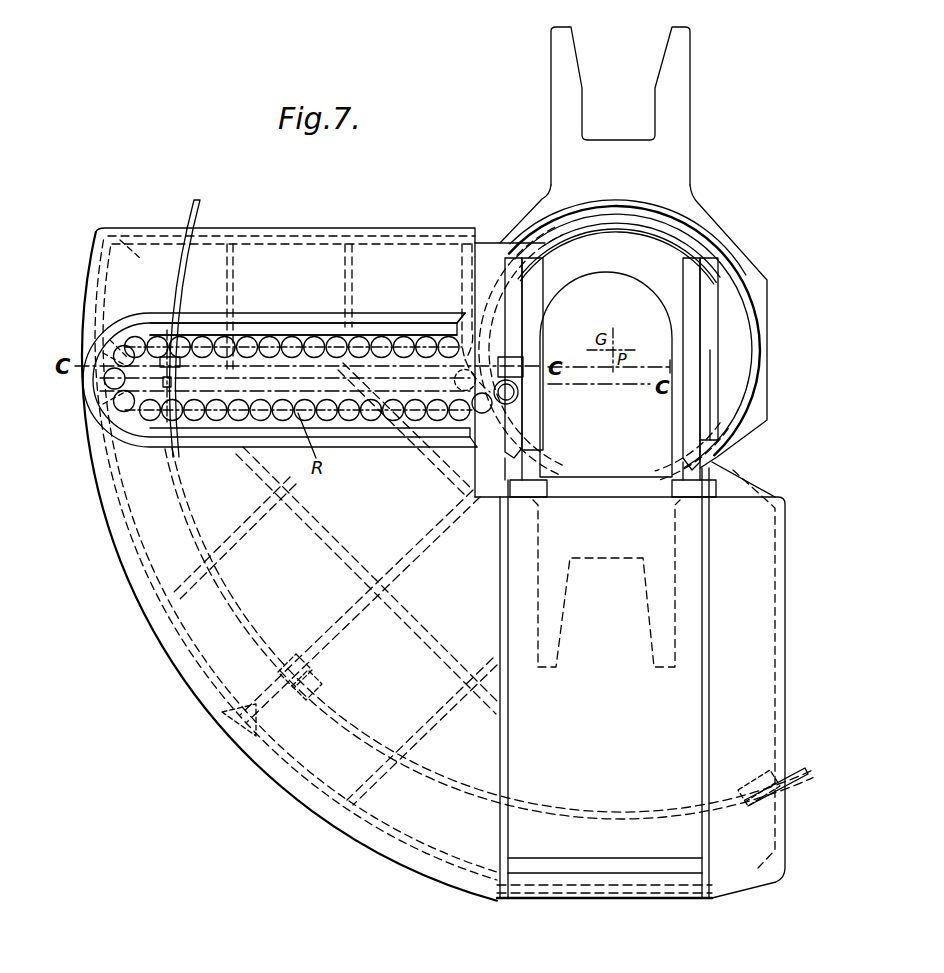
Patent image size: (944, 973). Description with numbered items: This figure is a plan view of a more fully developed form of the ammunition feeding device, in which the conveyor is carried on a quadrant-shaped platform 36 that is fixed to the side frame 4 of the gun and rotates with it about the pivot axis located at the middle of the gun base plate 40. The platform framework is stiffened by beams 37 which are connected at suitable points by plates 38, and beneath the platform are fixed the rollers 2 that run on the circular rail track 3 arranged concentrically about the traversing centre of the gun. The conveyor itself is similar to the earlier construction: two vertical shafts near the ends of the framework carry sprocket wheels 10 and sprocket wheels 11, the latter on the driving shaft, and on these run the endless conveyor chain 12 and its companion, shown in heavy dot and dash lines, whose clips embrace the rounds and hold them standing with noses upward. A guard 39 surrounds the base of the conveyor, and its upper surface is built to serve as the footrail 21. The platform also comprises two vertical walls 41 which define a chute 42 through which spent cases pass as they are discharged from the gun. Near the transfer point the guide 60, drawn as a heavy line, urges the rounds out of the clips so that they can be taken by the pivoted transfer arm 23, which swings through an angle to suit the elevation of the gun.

The rollers 2 is at (292, 660).
The rail track 3 is at (197, 206).
The side frame 4 is at (660, 263).
The sprocket wheels 10 is at (147, 365).
The sprocket wheels 11 is at (447, 318).
The endless conveyor chain 12 is at (250, 367).
The footrail 21 is at (372, 327).
The arm 23 is at (523, 393).
The quadrant-shaped platform 36 is at (297, 757).
The beams 37 is at (348, 566).
The plates 38 is at (225, 732).
The guard 39 is at (297, 318).
The gun base plate 40 is at (762, 295).
The vertical walls 41 is at (700, 703).
The chute 42 is at (625, 663).
The guide 60 is at (485, 406).